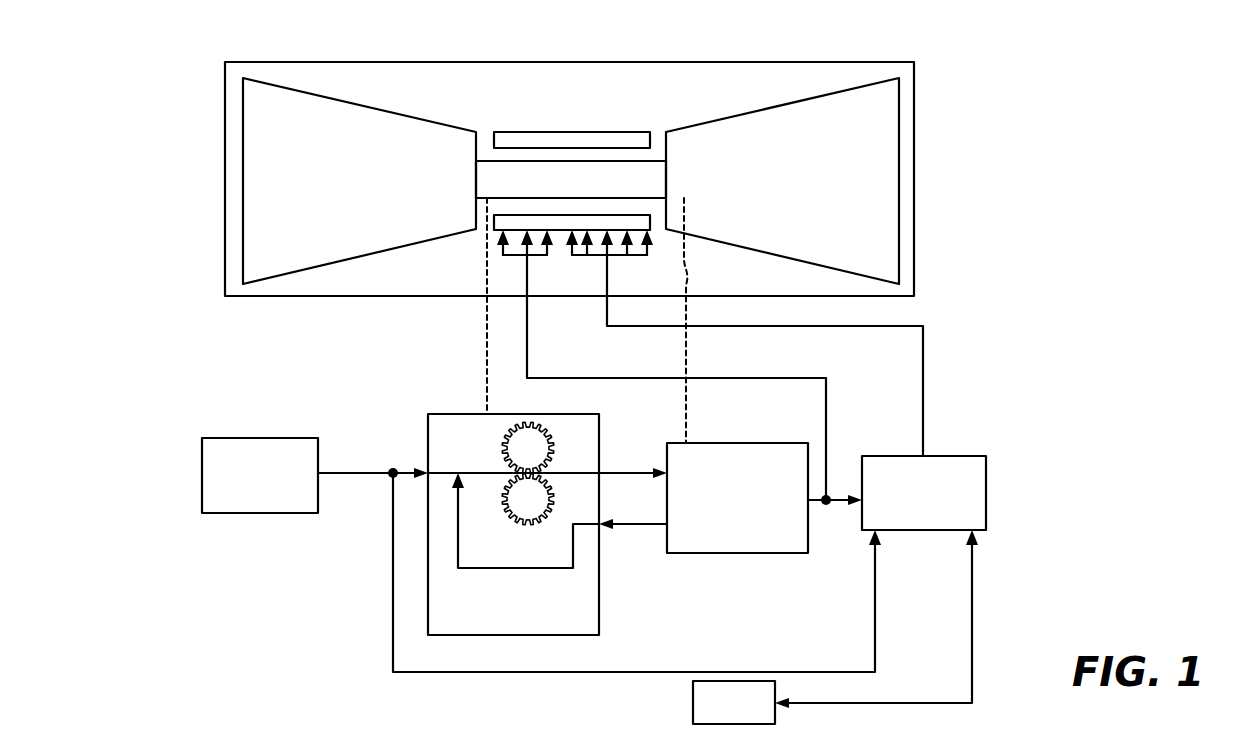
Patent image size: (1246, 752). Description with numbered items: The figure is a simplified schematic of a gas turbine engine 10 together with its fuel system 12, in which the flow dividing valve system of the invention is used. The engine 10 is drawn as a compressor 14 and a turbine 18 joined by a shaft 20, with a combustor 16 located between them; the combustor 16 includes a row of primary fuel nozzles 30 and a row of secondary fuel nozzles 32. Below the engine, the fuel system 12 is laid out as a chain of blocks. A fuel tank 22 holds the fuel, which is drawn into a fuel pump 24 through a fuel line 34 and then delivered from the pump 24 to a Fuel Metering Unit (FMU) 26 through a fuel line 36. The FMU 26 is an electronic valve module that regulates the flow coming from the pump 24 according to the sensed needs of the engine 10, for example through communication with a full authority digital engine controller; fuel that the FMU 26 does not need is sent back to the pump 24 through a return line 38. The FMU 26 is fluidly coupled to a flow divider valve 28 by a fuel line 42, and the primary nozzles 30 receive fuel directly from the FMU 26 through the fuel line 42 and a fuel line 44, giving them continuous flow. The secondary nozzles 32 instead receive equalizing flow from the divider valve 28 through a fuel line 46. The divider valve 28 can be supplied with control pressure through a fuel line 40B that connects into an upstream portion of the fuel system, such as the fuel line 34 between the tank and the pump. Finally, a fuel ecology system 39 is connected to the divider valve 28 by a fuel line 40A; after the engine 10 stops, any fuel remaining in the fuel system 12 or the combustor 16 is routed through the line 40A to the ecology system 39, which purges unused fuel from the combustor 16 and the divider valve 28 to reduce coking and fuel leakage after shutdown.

The gas turbine engine 10 is at (1005, 172).
The fuel system 12 is at (345, 573).
The compressor 14 is at (359, 181).
The combustor 16 is at (580, 130).
The turbine 18 is at (782, 181).
The shaft 20 is at (571, 179).
The fuel tank 22 is at (265, 438).
The fuel pump 24 is at (505, 636).
The Fuel Metering Unit (FMU) 26 is at (737, 498).
The flow divider valve 28 is at (912, 531).
The primary fuel nozzles 30 is at (540, 270).
The secondary fuel nozzles 32 is at (655, 266).
The fuel line 34 is at (337, 476).
The fuel line 36 is at (613, 470).
The return line 38 is at (617, 530).
The fuel ecology system 39 is at (734, 702).
The fuel line 40A is at (885, 702).
The fuel line 40B is at (822, 671).
The fuel line 42 is at (826, 506).
The fuel line 44 is at (733, 378).
The fuel line 46 is at (925, 378).